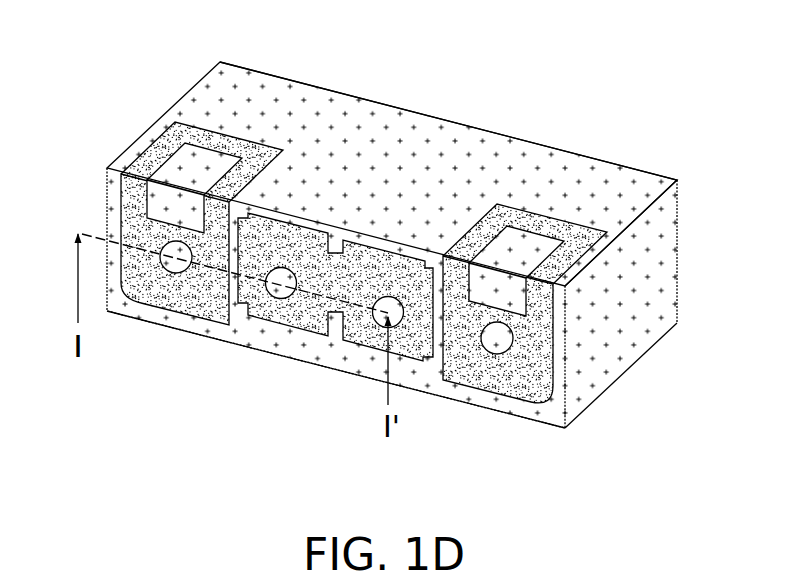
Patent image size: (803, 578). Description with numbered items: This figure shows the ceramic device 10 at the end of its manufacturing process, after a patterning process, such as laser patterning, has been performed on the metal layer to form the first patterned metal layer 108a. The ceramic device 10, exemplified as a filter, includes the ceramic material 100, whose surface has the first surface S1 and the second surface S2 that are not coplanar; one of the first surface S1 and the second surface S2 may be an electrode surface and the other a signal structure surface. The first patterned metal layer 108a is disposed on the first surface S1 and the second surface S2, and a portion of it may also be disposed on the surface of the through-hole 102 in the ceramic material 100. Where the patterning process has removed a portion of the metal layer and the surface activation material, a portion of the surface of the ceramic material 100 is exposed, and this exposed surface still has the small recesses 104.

The ceramic device 10 is at (397, 258).
The ceramic material 100 is at (290, 291).
The through-hole 102 is at (173, 269).
The recesses 104 is at (211, 308).
The first patterned metal layer 108a is at (351, 127).
The first surface S1 is at (574, 178).
The second surface S2 is at (548, 411).